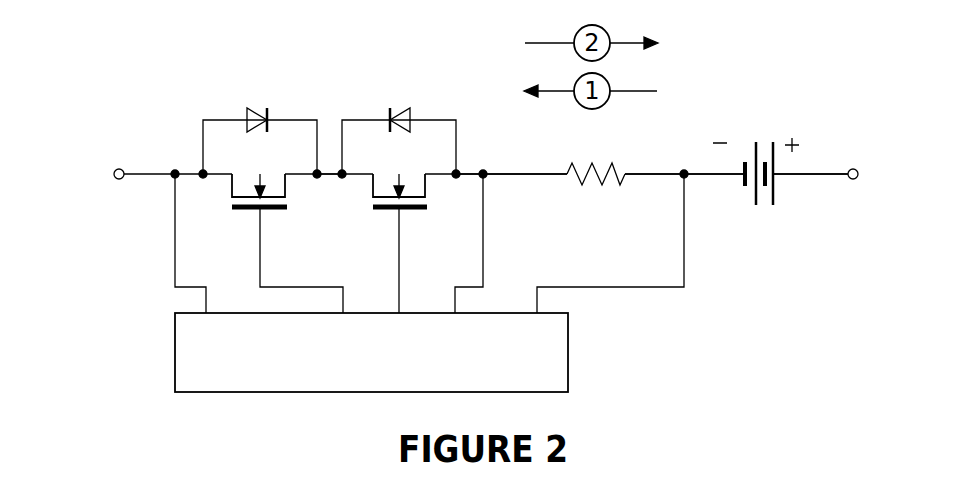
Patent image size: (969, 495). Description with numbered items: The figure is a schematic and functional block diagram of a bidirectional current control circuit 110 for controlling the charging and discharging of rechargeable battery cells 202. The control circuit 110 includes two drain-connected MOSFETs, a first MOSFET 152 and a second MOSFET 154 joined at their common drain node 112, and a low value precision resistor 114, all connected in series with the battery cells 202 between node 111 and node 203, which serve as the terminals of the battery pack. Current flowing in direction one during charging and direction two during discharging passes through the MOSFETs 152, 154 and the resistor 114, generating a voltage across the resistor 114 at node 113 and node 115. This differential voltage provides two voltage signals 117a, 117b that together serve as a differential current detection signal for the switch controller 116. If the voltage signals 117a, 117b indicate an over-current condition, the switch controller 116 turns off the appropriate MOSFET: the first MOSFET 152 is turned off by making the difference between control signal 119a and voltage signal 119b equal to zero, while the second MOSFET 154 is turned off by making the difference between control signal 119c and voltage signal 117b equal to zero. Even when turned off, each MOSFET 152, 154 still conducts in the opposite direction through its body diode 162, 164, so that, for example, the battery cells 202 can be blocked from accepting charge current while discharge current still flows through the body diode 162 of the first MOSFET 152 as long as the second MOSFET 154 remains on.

The control circuit 110 is at (692, 342).
The node 111 is at (143, 172).
The intermediate node 112 is at (335, 248).
The node 113 is at (503, 172).
The low value precision resistor 114 is at (617, 168).
The node 115 is at (687, 163).
The switch controller 116 is at (175, 347).
The voltage signal 117a is at (615, 287).
The voltage signal 117b is at (483, 217).
The control signal 119a is at (260, 243).
The voltage signal 119b is at (175, 218).
The control signal 119c is at (399, 240).
The first MOSFET 152 is at (243, 173).
The second MOSFET 154 is at (417, 173).
The body diode 162 is at (257, 108).
The body diode 164 is at (402, 108).
The rechargeable battery cells 202 is at (775, 196).
The node 203 is at (827, 172).